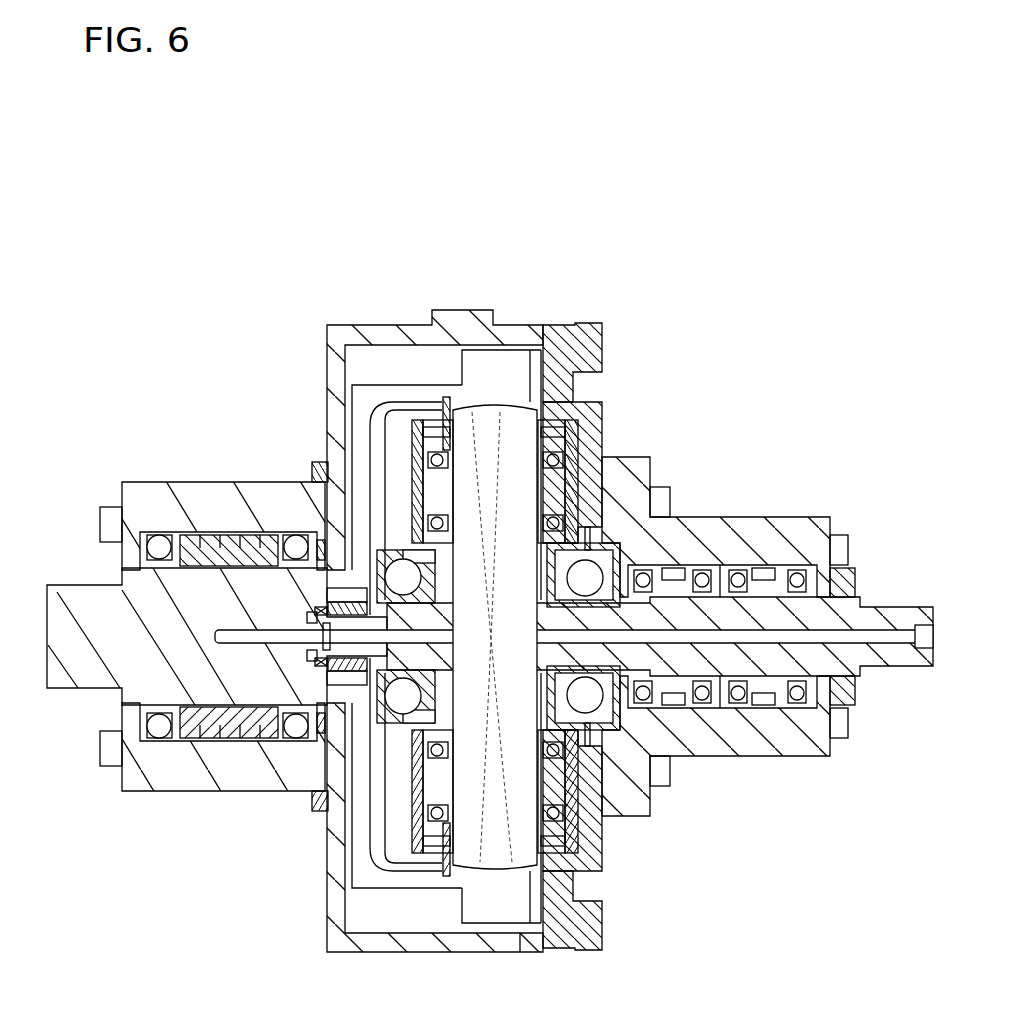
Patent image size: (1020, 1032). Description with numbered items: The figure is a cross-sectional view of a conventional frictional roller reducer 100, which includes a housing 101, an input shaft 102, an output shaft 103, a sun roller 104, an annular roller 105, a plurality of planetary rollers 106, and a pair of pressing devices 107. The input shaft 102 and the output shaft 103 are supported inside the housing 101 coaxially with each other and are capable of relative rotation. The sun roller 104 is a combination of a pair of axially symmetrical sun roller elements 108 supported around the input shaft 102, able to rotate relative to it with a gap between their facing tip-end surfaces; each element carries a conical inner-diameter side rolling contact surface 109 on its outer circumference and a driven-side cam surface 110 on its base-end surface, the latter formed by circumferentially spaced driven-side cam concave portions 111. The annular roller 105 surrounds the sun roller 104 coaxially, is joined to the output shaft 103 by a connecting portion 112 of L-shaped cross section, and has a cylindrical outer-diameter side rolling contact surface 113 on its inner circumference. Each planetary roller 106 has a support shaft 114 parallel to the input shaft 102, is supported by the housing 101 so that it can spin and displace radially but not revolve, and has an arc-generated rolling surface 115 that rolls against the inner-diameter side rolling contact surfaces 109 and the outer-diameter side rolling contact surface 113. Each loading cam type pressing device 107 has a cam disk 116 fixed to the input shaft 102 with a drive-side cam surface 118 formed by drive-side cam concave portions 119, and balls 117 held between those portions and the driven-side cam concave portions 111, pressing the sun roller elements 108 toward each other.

The frictional roller reducer 100 is at (474, 625).
The housing 101 is at (386, 335).
The input shaft 102 is at (762, 605).
The output shaft 103 is at (190, 585).
The sun roller 104 is at (368, 710).
The annular roller 105 is at (497, 370).
The planetary roller 106 is at (598, 410).
The pressing device 107 is at (320, 540).
The sun roller element 108 is at (490, 800).
The inner-diameter side rolling contact surface 109 is at (378, 480).
The driven-side cam surface 110 is at (400, 700).
The driven-side cam concave portion 111 is at (405, 470).
The connecting portion 112 is at (377, 882).
The outer-diameter side rolling contact surface 113 is at (573, 322).
The support shaft 114 is at (412, 470).
The rolling surface 115 is at (483, 397).
The cam disk 116 is at (150, 720).
The ball 117 is at (430, 460).
The drive-side cam surface 118 is at (320, 660).
The drive-side cam concave portion 119 is at (318, 478).